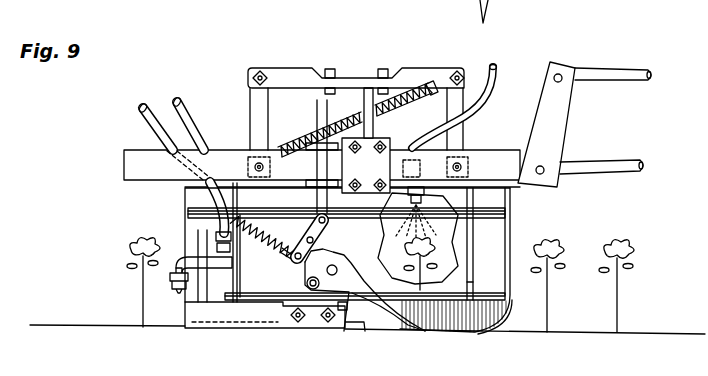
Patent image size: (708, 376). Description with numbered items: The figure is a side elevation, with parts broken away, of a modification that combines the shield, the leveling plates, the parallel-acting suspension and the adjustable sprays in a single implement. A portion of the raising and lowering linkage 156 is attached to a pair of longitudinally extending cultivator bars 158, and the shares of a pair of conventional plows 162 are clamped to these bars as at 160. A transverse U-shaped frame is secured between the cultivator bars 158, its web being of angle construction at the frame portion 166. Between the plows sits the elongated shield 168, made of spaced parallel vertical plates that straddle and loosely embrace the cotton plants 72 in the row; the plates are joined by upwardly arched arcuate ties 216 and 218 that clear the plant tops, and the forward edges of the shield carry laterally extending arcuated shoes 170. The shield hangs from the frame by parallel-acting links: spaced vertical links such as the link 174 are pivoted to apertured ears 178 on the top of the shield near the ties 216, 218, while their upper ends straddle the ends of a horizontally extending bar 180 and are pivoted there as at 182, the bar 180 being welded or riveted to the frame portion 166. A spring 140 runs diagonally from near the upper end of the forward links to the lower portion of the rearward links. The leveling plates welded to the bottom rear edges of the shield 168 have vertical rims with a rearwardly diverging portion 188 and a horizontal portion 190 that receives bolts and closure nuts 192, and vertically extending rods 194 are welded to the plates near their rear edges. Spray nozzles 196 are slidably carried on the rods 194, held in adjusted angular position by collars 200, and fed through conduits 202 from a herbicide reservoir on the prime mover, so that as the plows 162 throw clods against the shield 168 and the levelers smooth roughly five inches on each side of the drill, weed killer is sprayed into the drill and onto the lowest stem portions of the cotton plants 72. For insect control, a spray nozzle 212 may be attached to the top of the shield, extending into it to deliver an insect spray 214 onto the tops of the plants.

The cotton plants 72 is at (614, 247).
The spring 140 is at (437, 74).
The raising and lowering linkage 156 is at (598, 57).
The cultivator bars 158 is at (218, 165).
The clamp 160 is at (315, 142).
The plows 162 is at (393, 325).
The web portion of angle construction 166 is at (355, 87).
The elongated shield 168 is at (463, 237).
The arcuated shoes 170 is at (500, 328).
The vertically extending link 174 is at (262, 100).
The apertured ears 178 is at (275, 152).
The horizontally extending bar 180 is at (290, 69).
The pivot 182 is at (260, 72).
The rearwardly diverging portion 188 is at (227, 318).
The horizontal portion 190 is at (327, 323).
The bolts and closure nuts 192 is at (297, 323).
The vertically extending rods 194 is at (201, 250).
The spray nozzles 196 is at (176, 288).
The collars 200 is at (193, 260).
The conduits 202 is at (183, 112).
The spray nozzle 212 is at (452, 200).
The insect spray 214 is at (378, 241).
The arcuate tie 216 is at (241, 281).
The arcuate tie 218 is at (468, 284).